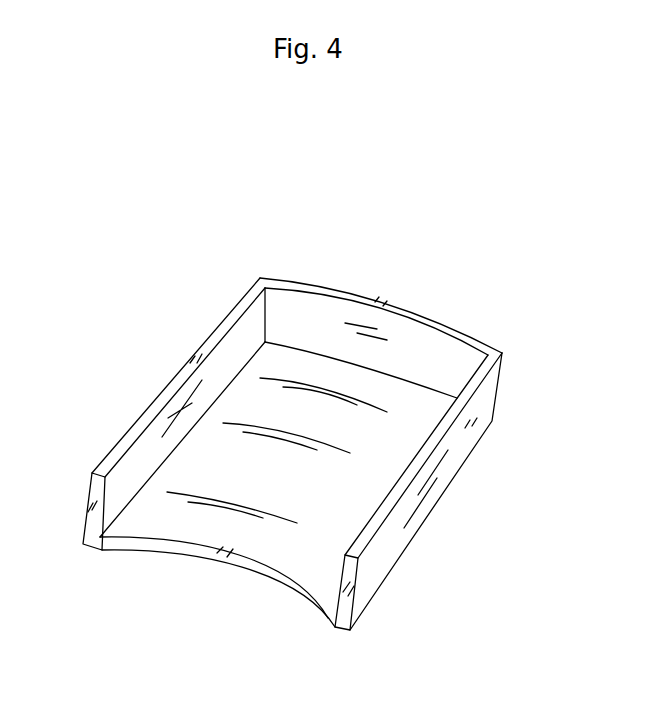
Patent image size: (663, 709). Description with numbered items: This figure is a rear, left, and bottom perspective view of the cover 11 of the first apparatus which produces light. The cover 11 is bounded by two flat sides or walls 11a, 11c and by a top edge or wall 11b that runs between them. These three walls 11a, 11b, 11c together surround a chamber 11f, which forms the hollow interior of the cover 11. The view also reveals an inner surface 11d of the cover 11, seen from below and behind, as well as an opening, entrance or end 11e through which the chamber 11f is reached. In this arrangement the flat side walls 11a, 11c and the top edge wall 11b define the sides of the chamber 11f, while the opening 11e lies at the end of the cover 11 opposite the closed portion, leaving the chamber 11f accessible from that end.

The cover 11 is at (295, 454).
The flat side wall 11a is at (152, 450).
The top edge wall 11b is at (315, 313).
The flat side wall 11c is at (473, 415).
The inner surface 11d is at (302, 538).
The opening 11e is at (204, 524).
The chamber 11f is at (155, 510).